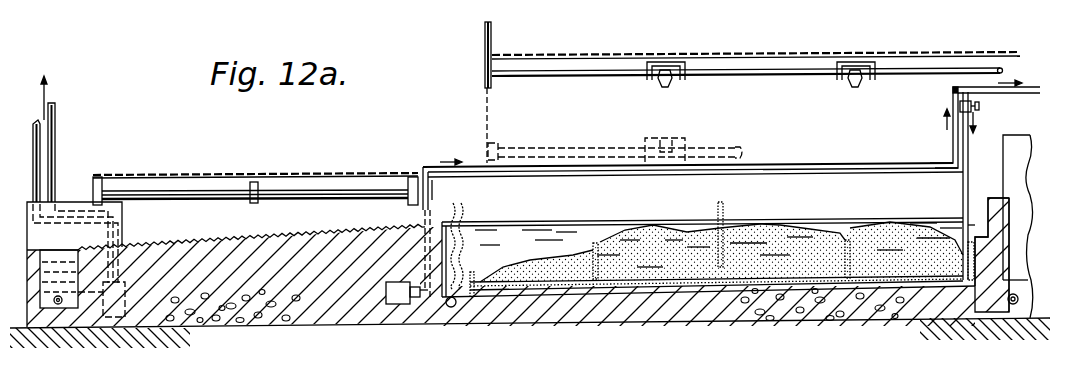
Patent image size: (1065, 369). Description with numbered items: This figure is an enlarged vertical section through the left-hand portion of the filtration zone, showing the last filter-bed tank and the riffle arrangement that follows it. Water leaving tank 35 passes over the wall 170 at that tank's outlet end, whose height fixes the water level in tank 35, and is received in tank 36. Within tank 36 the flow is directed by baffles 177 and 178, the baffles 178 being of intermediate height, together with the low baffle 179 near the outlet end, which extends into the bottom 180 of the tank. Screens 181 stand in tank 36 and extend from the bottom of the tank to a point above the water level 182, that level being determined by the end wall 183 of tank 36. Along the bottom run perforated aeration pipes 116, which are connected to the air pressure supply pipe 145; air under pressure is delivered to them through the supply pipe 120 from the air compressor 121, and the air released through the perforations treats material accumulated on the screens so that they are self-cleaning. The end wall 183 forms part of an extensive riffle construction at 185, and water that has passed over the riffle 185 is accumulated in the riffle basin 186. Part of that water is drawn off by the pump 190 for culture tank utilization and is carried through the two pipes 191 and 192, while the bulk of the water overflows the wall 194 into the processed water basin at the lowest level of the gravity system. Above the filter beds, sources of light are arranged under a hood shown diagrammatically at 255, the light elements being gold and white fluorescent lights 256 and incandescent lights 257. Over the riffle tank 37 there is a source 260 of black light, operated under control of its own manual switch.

The tank 35 is at (1013, 223).
The tank 36 is at (708, 199).
The riffle tank 37 is at (255, 187).
The aeration pipes 116 is at (618, 292).
The supply pipe 120 is at (478, 167).
The air compressor 121 is at (402, 306).
The air pressure supply pipe 145 is at (1000, 90).
The wall 170 is at (993, 199).
The baffles 177 is at (727, 206).
The baffles 178 is at (595, 246).
The low baffle 179 is at (475, 273).
The bottom 180 is at (678, 277).
The screens 181 is at (463, 211).
The water level 182 is at (573, 222).
The end wall 183 is at (450, 190).
The riffle 185 is at (267, 238).
The riffle basin 186 is at (62, 268).
The pump 190 is at (133, 312).
The pipe 191 is at (36, 131).
The pipe 192 is at (55, 156).
The wall 194 is at (33, 253).
The hood 255 is at (818, 72).
The fluorescent light 256 is at (588, 78).
The incandescent light 257 is at (656, 86).
The source of black light 260 is at (357, 186).